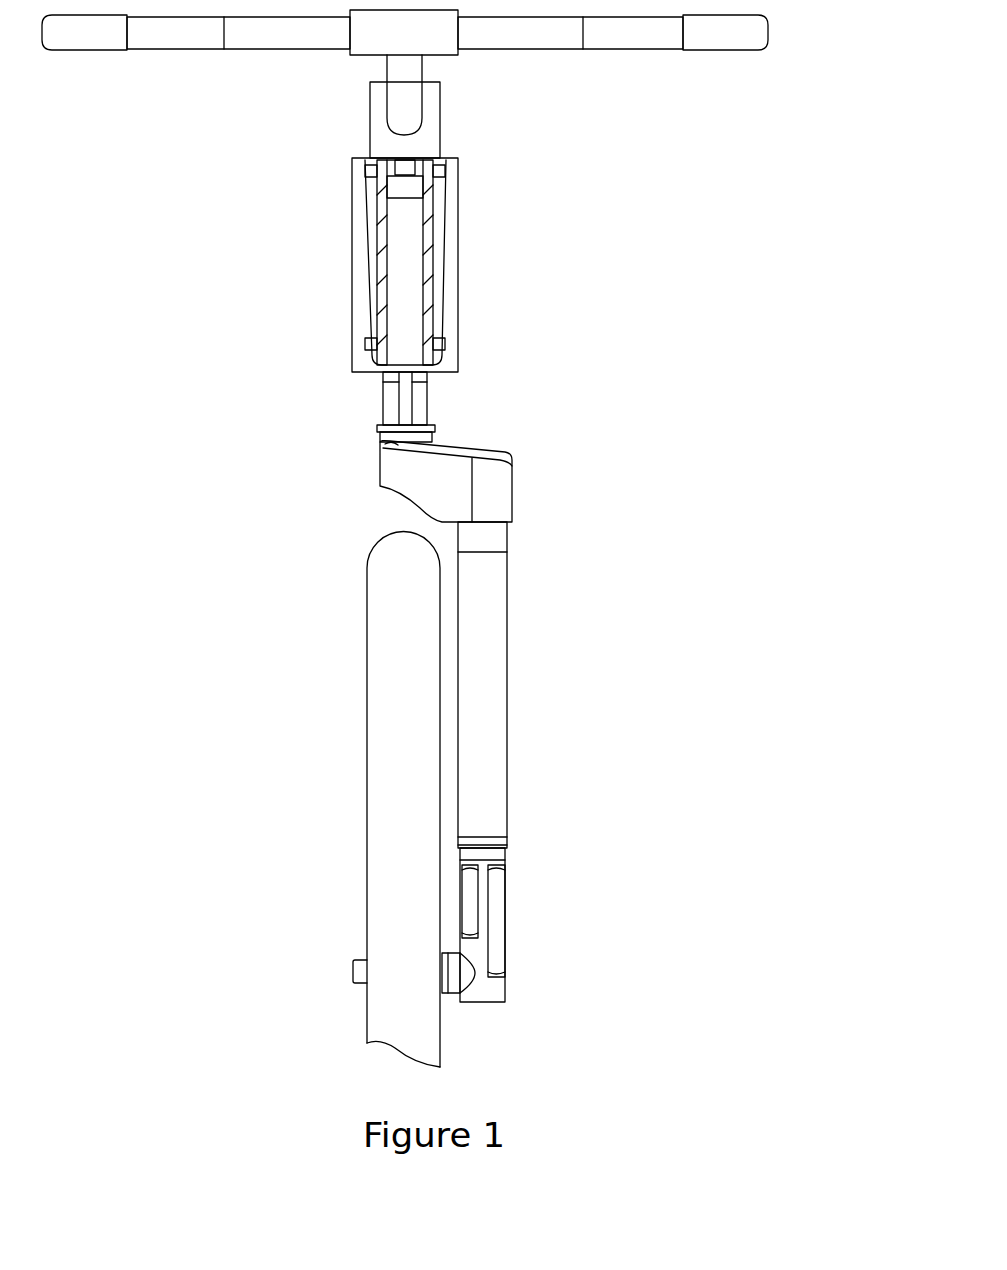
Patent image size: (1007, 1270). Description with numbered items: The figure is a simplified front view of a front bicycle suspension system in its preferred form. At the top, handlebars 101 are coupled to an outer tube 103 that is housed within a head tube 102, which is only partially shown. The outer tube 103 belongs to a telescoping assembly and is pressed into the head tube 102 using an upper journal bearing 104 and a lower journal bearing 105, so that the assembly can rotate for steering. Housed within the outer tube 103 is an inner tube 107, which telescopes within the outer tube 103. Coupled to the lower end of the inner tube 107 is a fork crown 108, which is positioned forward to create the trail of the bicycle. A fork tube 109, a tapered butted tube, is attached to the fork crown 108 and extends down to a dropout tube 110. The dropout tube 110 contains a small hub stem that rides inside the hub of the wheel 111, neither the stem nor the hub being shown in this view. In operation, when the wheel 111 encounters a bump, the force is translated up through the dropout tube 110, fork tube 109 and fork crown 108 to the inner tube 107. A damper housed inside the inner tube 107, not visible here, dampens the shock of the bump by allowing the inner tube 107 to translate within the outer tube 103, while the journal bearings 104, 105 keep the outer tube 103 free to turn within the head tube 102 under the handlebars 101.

The handlebars 101 is at (587, 55).
The head tube 102 is at (332, 256).
The outer tube 103 is at (473, 260).
The upper journal bearing 104 is at (478, 178).
The lower journal bearing 105 is at (477, 345).
The inner tube 107 is at (362, 403).
The fork crown 108 is at (534, 487).
The fork tube 109 is at (529, 660).
The dropout tube 110 is at (527, 926).
The wheel 111 is at (366, 700).